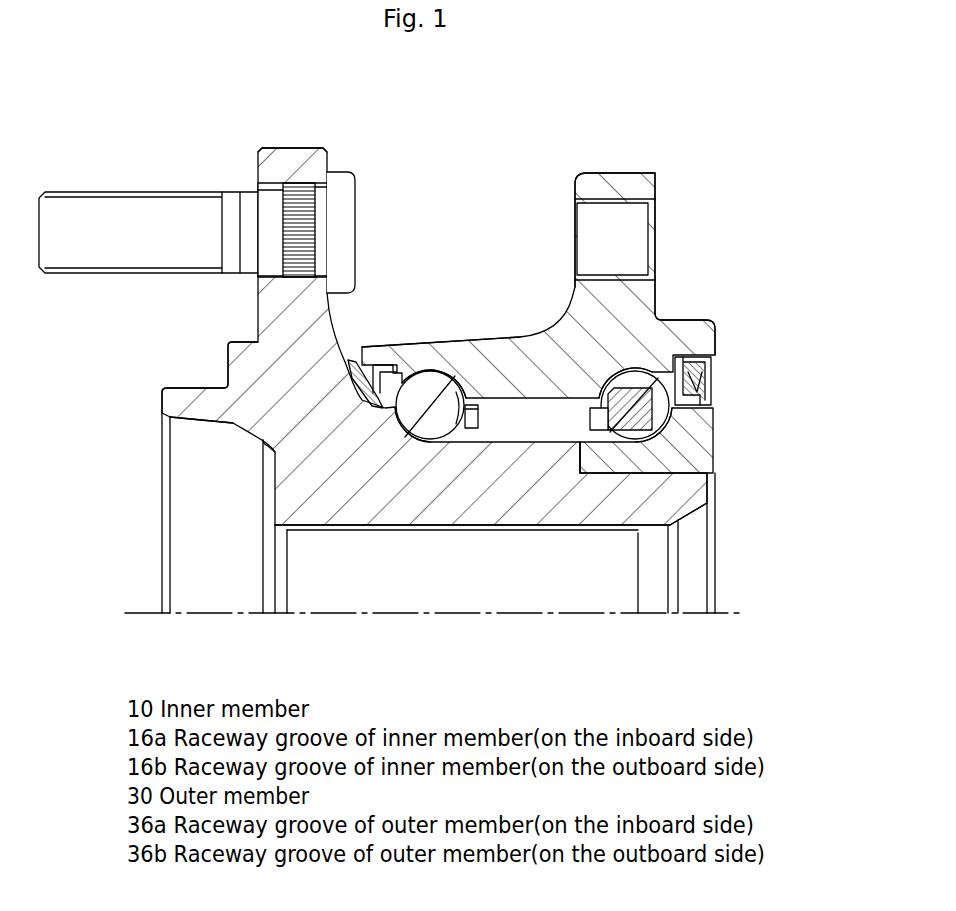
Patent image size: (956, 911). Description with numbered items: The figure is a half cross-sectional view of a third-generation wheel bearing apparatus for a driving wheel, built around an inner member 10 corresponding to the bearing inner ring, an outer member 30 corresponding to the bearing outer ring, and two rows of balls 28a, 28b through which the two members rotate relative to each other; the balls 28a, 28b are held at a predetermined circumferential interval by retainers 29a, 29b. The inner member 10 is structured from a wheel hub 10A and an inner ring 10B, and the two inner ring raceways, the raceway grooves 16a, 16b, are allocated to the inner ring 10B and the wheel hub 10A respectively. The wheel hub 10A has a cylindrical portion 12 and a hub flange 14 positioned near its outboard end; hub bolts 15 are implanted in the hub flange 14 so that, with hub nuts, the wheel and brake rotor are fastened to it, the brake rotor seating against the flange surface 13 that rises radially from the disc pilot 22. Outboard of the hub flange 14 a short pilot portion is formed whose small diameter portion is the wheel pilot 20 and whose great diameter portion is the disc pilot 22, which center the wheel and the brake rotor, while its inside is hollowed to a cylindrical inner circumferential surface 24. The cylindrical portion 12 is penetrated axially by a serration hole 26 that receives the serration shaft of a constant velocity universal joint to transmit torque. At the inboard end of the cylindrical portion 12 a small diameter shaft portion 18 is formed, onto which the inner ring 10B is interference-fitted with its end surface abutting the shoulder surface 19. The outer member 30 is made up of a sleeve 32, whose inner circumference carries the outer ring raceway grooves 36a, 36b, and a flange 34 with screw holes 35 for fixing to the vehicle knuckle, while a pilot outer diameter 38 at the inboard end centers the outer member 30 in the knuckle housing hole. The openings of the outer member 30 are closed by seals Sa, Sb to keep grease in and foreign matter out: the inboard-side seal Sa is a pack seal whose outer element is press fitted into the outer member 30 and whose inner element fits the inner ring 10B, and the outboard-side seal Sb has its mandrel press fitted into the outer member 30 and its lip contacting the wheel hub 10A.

The inner member 10 is at (219, 511).
The wheel hub 10A is at (264, 517).
The inner ring 10B is at (721, 432).
The cylindrical portion 12 is at (517, 510).
The flange surface 13 is at (258, 168).
The hub flange 14 is at (300, 160).
The hub bolt 15 is at (124, 214).
The raceway groove of inner member on the inboard side 16a is at (643, 433).
The raceway groove of inner member on the outboard side 16b is at (443, 447).
The small diameter shaft portion 18 is at (682, 495).
The shoulder surface 19 is at (586, 466).
The wheel pilot 20 is at (200, 388).
The disc pilot 22 is at (237, 343).
The cylindrical inner circumferential surface 24 is at (207, 420).
The serration hole 26 is at (497, 595).
The balls on the inboard side 28a is at (553, 322).
The balls on the outboard side 28b is at (420, 388).
The retainer on the inboard side 29a is at (590, 410).
The retainer on the outboard side 29b is at (478, 423).
The outer member 30 is at (712, 191).
The sleeve 32 is at (502, 352).
The flange 34 is at (612, 182).
The screw hole 35 is at (592, 236).
The raceway groove of outer member on the inboard side 36a is at (655, 363).
The raceway groove of outer member on the outboard side 36b is at (450, 380).
The pilot outer diameter 38 is at (688, 318).
The inboard-side seal Sa is at (732, 377).
The outboard-side seal Sb is at (360, 344).